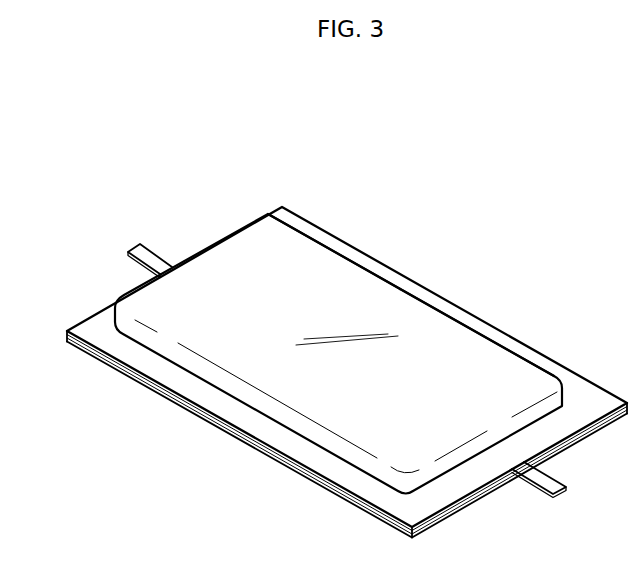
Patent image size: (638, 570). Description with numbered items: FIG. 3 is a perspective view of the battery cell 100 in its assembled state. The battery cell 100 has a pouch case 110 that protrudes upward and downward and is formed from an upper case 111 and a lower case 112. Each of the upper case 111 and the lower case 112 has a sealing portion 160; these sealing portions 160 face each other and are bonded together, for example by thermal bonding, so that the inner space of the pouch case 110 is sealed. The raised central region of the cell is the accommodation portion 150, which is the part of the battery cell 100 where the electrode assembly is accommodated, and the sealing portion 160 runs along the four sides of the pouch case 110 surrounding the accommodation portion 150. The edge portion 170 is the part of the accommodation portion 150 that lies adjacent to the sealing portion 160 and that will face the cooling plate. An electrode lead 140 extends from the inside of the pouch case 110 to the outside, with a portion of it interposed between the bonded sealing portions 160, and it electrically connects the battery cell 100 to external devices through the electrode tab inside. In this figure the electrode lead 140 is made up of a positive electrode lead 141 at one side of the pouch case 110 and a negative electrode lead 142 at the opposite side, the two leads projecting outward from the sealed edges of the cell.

The battery cell 100 is at (230, 152).
The pouch case 110 is at (221, 467).
The upper case 111 is at (288, 458).
The lower case 112 is at (300, 476).
The electrode lead 140 is at (533, 493).
The positive electrode lead 141 is at (558, 481).
The negative electrode lead 142 is at (139, 248).
The accommodation portion 150 is at (458, 362).
The sealing portion 160 is at (437, 302).
The edge portion 170 is at (371, 264).